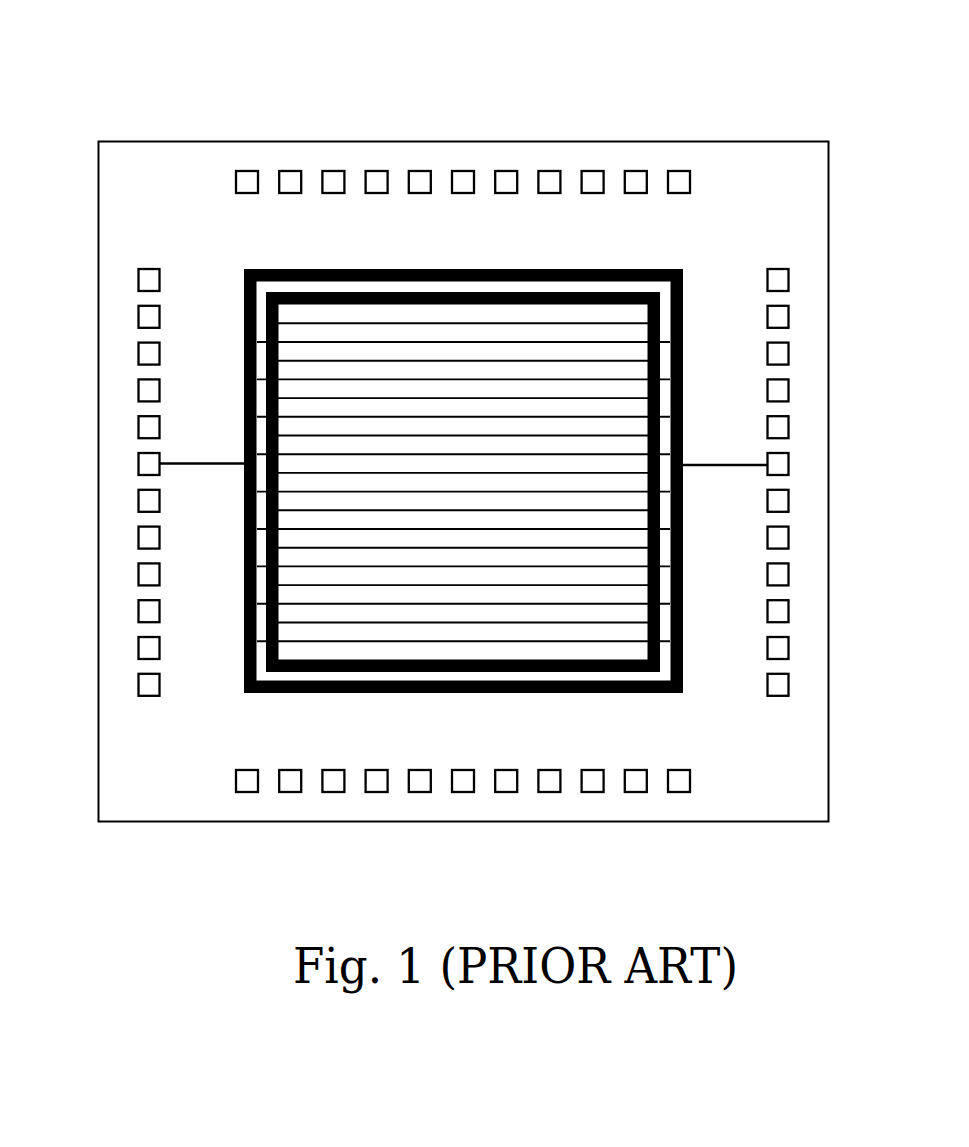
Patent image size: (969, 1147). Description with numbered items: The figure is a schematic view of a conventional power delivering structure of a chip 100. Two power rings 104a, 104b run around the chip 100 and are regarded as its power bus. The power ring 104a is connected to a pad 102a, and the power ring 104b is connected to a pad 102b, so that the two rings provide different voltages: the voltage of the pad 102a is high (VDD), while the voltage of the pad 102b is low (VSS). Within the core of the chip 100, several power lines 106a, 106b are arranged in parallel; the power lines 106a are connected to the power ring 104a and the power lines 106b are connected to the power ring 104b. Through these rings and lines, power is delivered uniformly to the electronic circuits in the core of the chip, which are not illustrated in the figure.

The chip 100 is at (156, 116).
The pad 102a is at (138, 463).
The pad 102b is at (790, 462).
The power ring 104a is at (245, 692).
The power ring 104b is at (623, 676).
The power lines 106a is at (389, 604).
The power lines 106b is at (530, 587).